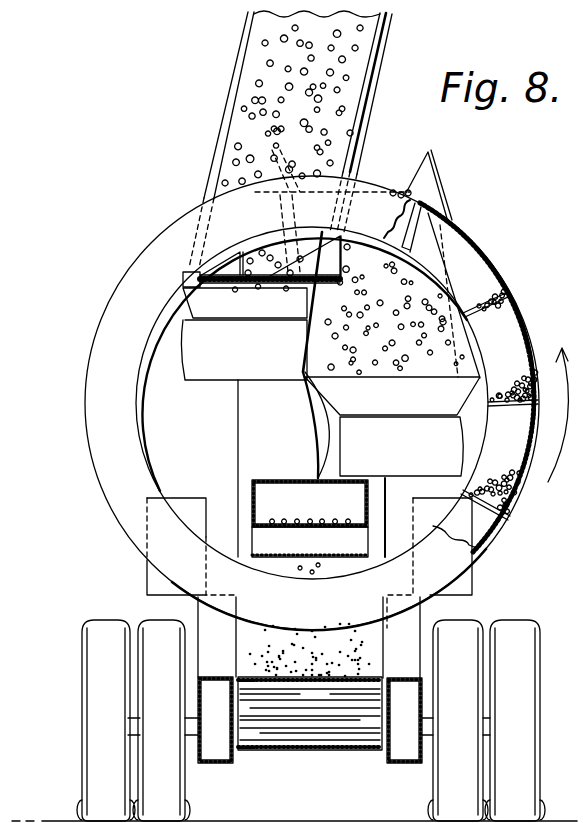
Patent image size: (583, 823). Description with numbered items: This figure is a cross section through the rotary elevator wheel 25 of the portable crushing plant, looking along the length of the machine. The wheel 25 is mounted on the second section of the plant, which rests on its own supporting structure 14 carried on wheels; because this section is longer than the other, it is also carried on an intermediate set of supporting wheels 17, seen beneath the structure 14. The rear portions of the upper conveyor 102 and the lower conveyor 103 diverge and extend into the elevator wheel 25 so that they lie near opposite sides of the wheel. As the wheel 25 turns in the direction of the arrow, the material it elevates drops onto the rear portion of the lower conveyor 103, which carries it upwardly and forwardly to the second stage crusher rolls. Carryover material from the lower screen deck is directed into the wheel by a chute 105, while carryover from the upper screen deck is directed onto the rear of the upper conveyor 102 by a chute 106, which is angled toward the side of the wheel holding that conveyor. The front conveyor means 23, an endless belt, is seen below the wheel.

The supporting structure 14 is at (150, 582).
The intermediate set of supporting wheels 17 is at (67, 725).
The front conveyor means 23 is at (331, 761).
The elevator wheel 25 is at (117, 308).
The upper conveyor 102 is at (247, 117).
The lower conveyor 103 is at (413, 298).
The chute 105 is at (311, 480).
The chute 106 is at (264, 278).